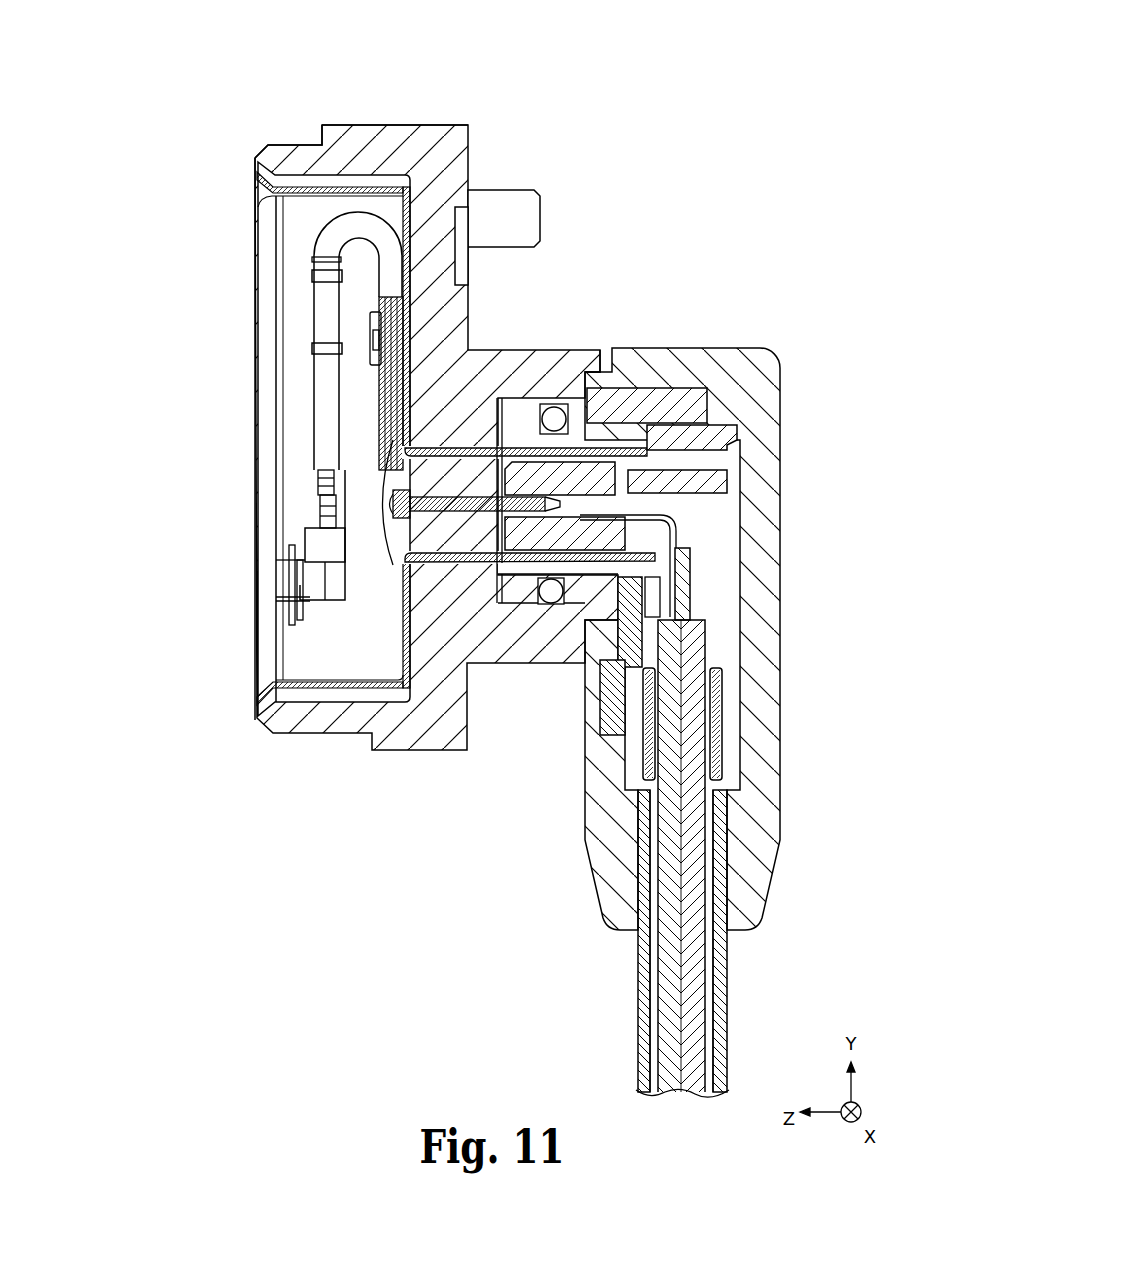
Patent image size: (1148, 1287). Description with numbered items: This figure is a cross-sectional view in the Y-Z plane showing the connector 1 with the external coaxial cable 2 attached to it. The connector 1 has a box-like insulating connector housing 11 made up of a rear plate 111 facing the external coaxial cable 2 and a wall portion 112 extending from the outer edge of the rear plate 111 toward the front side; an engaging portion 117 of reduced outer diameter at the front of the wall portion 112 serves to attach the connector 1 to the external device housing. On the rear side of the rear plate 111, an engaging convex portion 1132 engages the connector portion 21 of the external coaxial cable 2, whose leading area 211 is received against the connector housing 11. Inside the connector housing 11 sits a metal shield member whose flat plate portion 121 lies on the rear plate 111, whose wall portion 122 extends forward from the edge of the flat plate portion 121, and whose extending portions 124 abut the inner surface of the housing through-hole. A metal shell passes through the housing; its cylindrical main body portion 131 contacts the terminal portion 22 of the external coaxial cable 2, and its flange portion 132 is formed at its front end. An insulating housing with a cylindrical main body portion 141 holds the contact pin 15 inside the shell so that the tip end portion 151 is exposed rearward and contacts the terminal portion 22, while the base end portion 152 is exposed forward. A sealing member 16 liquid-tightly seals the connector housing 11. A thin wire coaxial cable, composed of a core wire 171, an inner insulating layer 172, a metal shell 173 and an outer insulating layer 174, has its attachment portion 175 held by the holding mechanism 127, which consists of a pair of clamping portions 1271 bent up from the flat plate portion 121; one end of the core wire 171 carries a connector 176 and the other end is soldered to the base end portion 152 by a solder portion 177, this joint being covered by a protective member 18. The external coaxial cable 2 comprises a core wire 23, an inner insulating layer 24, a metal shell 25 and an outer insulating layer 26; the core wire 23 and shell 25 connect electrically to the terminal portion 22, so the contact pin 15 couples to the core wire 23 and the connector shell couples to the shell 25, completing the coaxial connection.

The connector 1 is at (433, 60).
The connector housing 11 is at (455, 103).
The rear plate 111 is at (456, 160).
The wall portion 112 is at (363, 135).
The engaging portion 117 is at (278, 153).
The flat plate portion 121 is at (420, 245).
The wall portion 122 is at (257, 176).
The extending portions 124 is at (432, 445).
The holding mechanism 127 is at (368, 335).
The clamping portions 1271 is at (475, 504).
The main body portion 131 is at (458, 470).
The flange portion 132 is at (400, 640).
The engaging convex portion 1132 is at (605, 350).
The main body portion 141 is at (482, 458).
The contact pin 15 is at (385, 840).
The tip end portion 151 is at (492, 600).
The base end portion 152 is at (440, 560).
The sealing member 16 is at (495, 598).
The core wire 171 is at (345, 505).
The inner insulating layer 172 is at (373, 465).
The shell 173 is at (385, 437).
The outer insulating layer 174 is at (318, 380).
The attachment portion 175 is at (385, 300).
The connector 176 is at (312, 625).
The solder portion 177 is at (360, 512).
The protective member 18 is at (348, 522).
The external coaxial cable 2 is at (807, 314).
The connector portion 21 is at (780, 360).
The insert 211 is at (615, 352).
The terminal portion 22 is at (612, 497).
The core wire 23 is at (690, 577).
The inner insulating layer 24 is at (700, 652).
The shell 25 is at (722, 688).
The outer insulating layer 26 is at (728, 822).